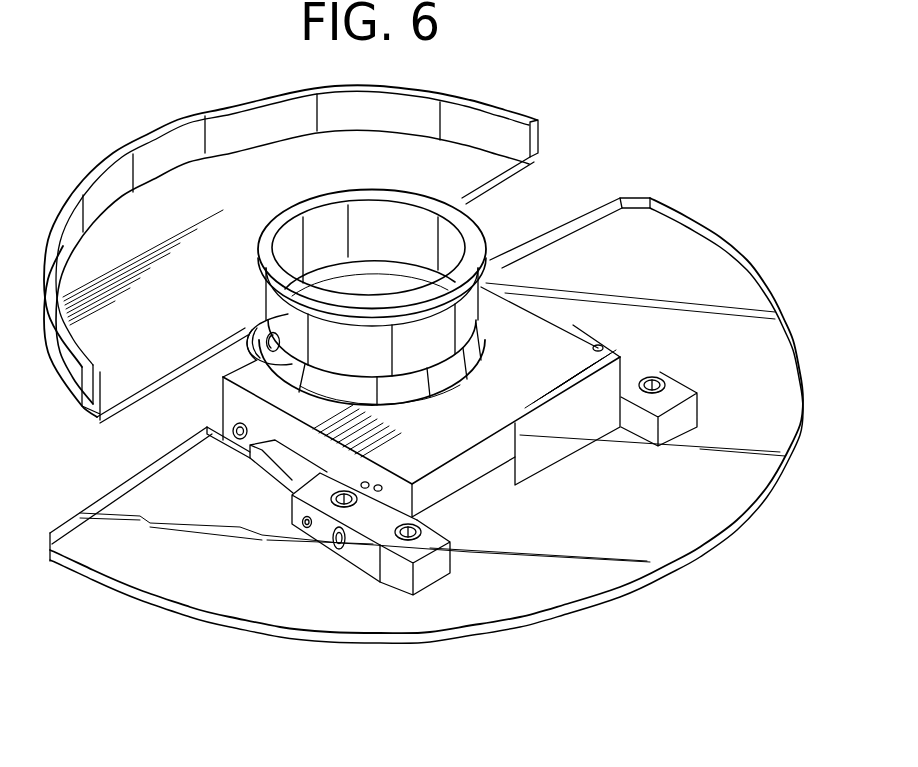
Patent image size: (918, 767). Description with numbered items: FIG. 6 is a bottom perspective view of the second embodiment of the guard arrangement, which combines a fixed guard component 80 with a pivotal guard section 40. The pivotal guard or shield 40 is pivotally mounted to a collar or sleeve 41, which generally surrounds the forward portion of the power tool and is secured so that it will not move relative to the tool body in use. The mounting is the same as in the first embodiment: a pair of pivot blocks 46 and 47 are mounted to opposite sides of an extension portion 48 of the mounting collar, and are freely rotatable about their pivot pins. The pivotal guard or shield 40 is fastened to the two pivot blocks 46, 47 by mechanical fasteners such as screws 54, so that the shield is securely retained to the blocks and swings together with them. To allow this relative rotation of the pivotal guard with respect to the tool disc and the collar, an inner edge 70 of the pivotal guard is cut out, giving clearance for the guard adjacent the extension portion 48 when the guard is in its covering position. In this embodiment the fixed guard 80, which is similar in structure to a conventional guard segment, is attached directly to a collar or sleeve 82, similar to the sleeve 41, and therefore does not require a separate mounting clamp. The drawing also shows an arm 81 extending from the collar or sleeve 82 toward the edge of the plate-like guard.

The pivotal guard or shield 40 is at (280, 634).
The collar or sleeve 41 is at (225, 407).
The pivot block 46 is at (688, 428).
The pivot block 47 is at (437, 568).
The extension portion 48 is at (485, 458).
The screws 54 is at (660, 378).
The inner edge 70 is at (248, 446).
The fixed guard component 80 is at (532, 173).
The arm 81 is at (470, 335).
The collar or sleeve 82 is at (448, 246).